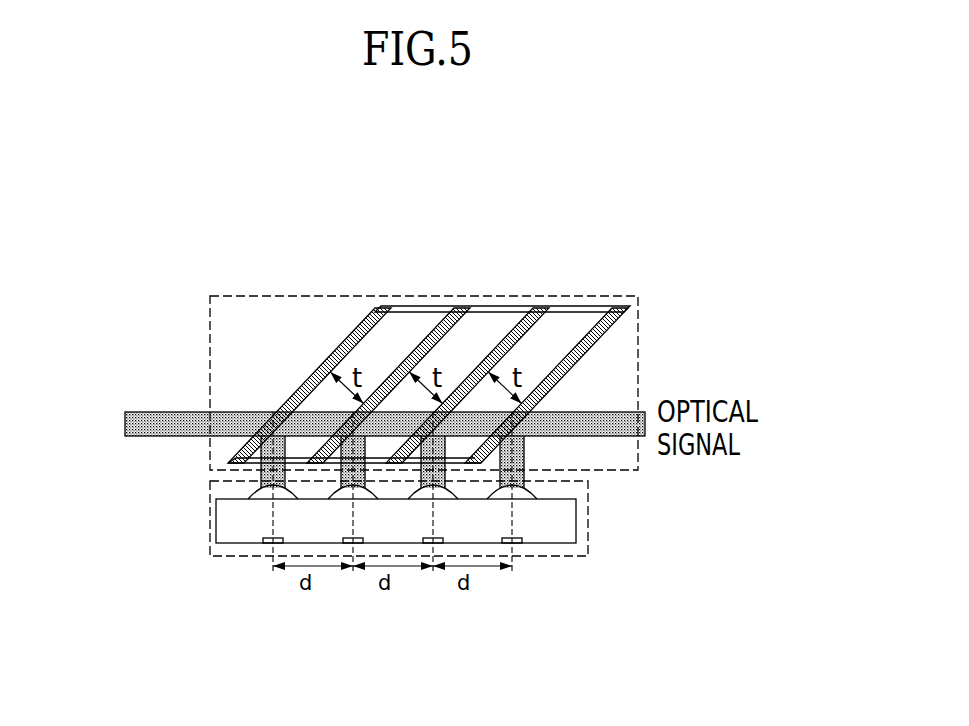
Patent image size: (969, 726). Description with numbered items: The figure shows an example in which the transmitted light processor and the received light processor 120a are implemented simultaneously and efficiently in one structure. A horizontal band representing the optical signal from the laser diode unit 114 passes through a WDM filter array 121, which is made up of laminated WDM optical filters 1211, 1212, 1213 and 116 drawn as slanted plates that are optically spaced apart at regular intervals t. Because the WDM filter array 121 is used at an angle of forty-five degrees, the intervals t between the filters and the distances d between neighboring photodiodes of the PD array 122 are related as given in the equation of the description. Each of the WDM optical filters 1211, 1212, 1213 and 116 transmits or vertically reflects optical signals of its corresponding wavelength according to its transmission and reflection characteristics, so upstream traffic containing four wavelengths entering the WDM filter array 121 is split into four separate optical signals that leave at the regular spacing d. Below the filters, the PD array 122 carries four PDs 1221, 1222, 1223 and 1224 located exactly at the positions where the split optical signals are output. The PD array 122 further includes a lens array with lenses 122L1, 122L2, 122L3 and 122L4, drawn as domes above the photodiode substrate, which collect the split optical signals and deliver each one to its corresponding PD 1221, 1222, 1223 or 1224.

The laser diode unit 114 is at (101, 439).
The WDM optical filter 116 is at (348, 335).
The received light processor 120a is at (652, 232).
The WDM filter array 121 is at (209, 363).
The WDM optical filter 1211 is at (546, 347).
The WDM optical filter 1212 is at (467, 347).
The WDM optical filter 1213 is at (388, 347).
The PD array 122 is at (209, 516).
The PD 1221 is at (528, 560).
The PD 1222 is at (447, 560).
The PD 1223 is at (367, 560).
The PD 1224 is at (289, 560).
The lens 122L1 is at (494, 560).
The lens 122L2 is at (415, 560).
The lens 122L3 is at (336, 560).
The lens 122L4 is at (245, 560).